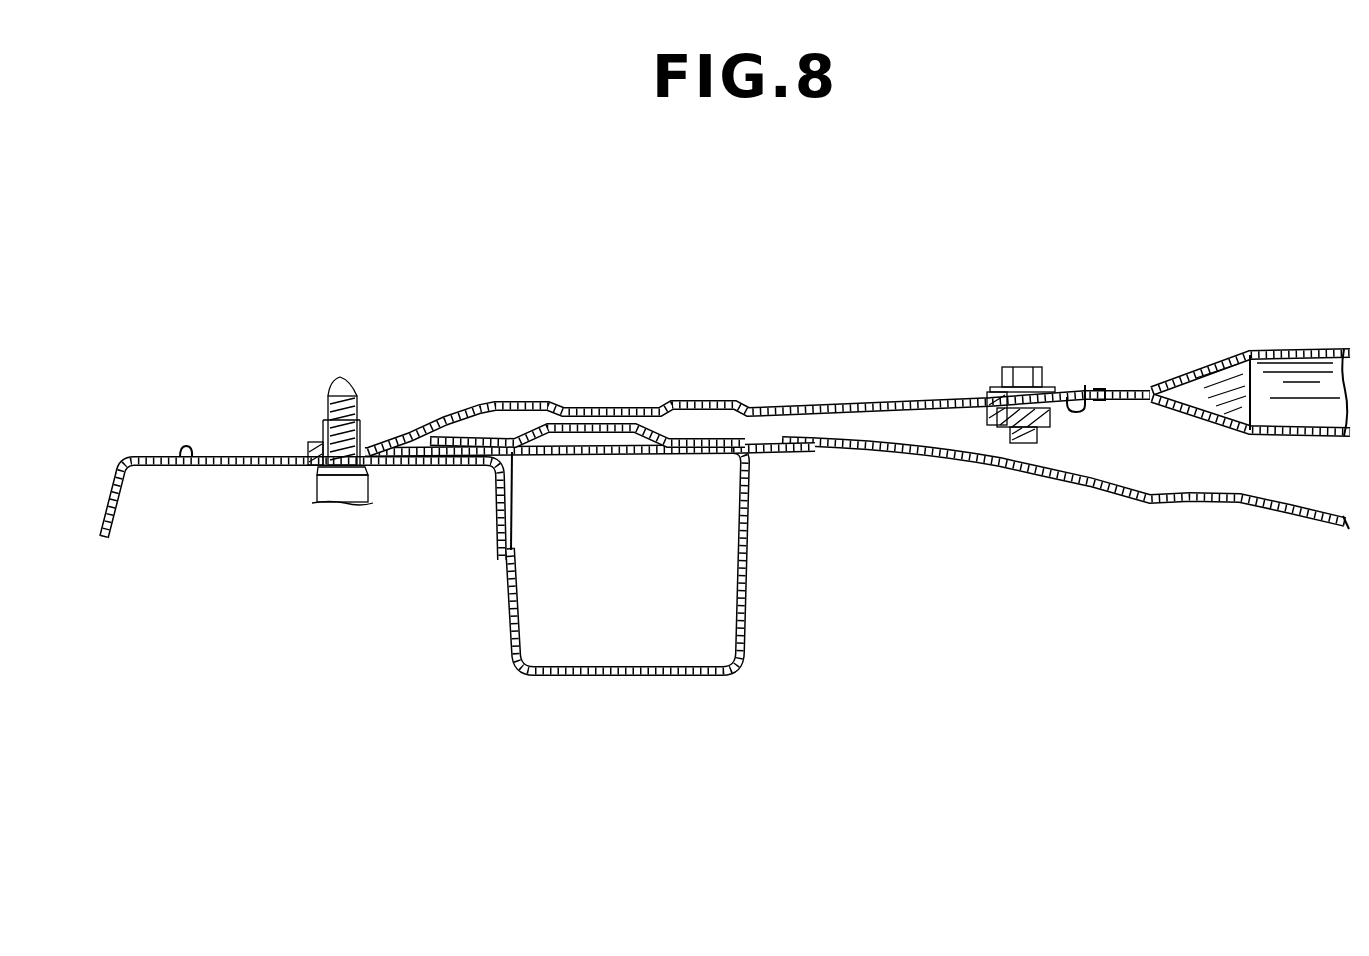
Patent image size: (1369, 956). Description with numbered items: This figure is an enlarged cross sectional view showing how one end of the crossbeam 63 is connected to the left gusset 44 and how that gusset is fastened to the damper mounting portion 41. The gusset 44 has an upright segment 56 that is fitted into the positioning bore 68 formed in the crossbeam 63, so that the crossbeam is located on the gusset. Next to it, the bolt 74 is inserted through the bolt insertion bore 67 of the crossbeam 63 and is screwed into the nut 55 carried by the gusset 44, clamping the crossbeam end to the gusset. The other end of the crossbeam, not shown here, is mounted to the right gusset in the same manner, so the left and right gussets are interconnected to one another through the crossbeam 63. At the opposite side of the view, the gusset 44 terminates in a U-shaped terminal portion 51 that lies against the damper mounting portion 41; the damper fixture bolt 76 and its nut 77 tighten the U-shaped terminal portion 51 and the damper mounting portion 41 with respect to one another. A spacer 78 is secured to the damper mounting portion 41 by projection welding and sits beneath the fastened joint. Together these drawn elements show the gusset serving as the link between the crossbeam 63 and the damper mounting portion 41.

The damper mounting portion 41 is at (247, 457).
The left gusset 44 is at (628, 403).
The U-shaped terminal portion 51 is at (415, 415).
The nut 55 is at (988, 428).
The upright segment 56 is at (1084, 385).
The crossbeam 63 is at (1280, 352).
The bolt insertion bore 67 is at (990, 390).
The positioning bore 68 is at (1100, 393).
The bolt 74 is at (1020, 367).
The damper fixture bolt 76 is at (332, 385).
The nut 77 is at (321, 424).
The spacer 78 is at (282, 468).